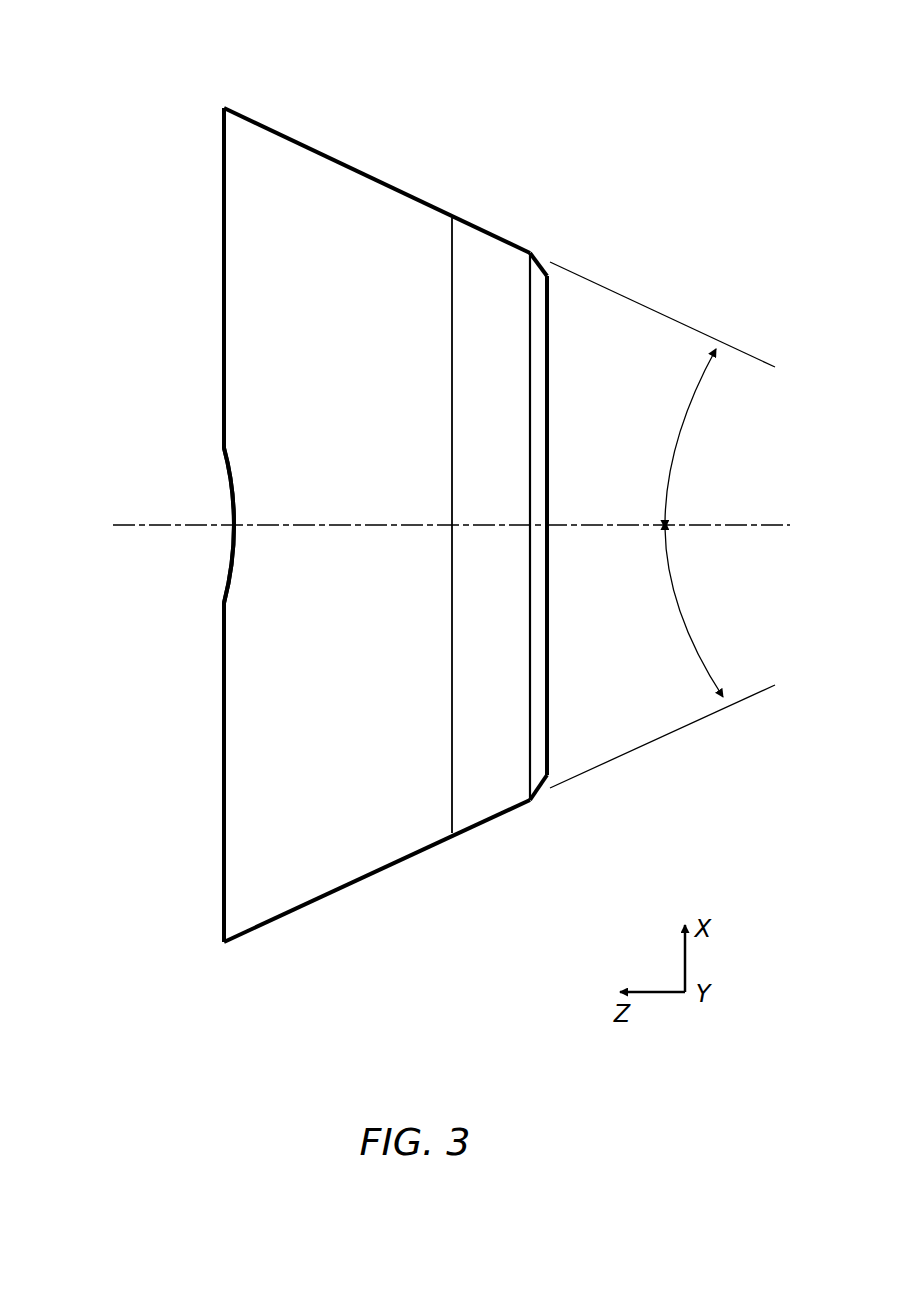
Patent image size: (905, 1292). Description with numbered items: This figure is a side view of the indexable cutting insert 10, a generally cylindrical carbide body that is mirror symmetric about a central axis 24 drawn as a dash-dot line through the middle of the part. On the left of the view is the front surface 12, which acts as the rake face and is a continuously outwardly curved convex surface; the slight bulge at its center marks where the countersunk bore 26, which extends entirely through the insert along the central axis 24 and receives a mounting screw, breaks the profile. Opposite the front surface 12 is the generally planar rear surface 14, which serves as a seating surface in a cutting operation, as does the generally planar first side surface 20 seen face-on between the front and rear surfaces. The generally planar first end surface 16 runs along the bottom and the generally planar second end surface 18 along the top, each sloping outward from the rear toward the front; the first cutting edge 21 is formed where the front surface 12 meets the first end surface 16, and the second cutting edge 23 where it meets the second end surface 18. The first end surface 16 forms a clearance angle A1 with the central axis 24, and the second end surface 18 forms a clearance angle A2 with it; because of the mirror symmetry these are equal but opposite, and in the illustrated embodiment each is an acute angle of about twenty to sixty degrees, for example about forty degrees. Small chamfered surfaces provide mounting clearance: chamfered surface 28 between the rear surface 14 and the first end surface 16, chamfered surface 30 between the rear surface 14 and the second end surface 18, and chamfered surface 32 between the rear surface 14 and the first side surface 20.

The indexable cutting insert 10 is at (64, 161).
The front surface 12 is at (221, 297).
The rear surface 14 is at (552, 400).
The first end surface 16 is at (337, 893).
The second end surface 18 is at (337, 157).
The first side surface 20 is at (490, 277).
The first cutting edge 21 is at (224, 945).
The second cutting edge 23 is at (222, 106).
The central axis 24 is at (146, 525).
The countersunk bore 26 is at (228, 562).
The chamfered surface 28 is at (545, 259).
The chamfered surface 30 is at (543, 792).
The chamfered surface 32 is at (540, 632).
The clearance angle A1 is at (693, 612).
The clearance angle A2 is at (686, 435).